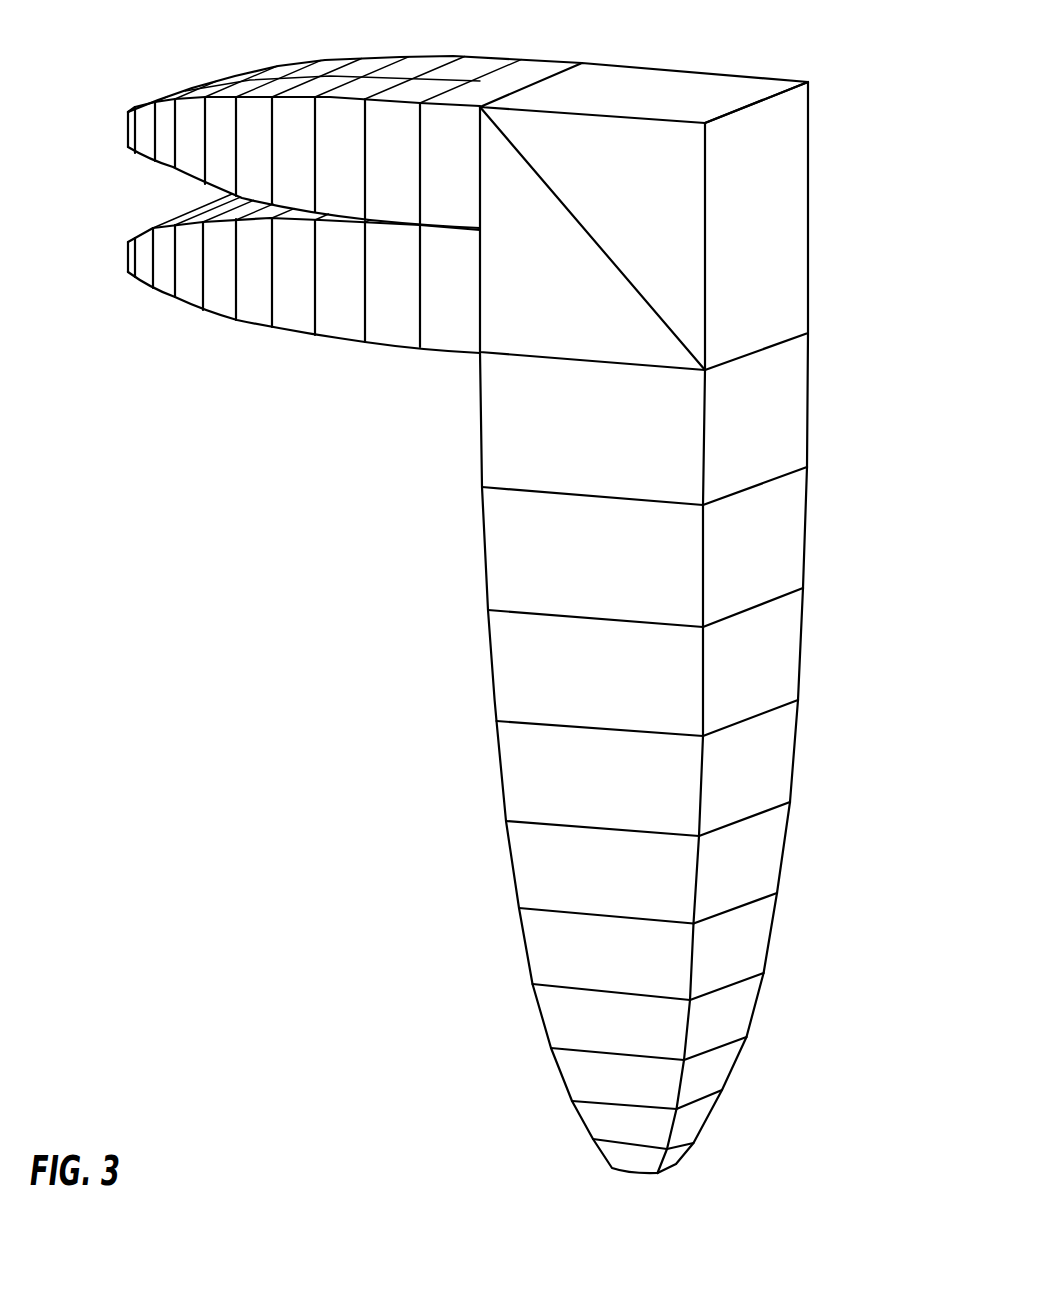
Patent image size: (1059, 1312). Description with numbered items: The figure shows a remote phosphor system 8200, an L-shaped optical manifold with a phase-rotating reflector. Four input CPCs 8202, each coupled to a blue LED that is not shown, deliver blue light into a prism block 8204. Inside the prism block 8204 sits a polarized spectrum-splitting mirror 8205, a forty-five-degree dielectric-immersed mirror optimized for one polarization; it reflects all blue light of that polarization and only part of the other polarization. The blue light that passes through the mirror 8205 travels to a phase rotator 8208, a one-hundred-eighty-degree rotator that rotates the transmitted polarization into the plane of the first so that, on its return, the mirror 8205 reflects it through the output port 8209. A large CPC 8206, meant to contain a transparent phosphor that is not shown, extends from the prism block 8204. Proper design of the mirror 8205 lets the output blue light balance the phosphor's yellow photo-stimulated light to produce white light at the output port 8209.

The remote phosphor system 8200 is at (307, 867).
The input CPCs 8202 is at (219, 286).
The prism block 8204 is at (580, 268).
The polarized spectrum-splitting mirror 8205 is at (652, 320).
The large CPC 8206 is at (512, 553).
The phase rotator 8208 is at (767, 175).
The output port 8209 is at (677, 88).